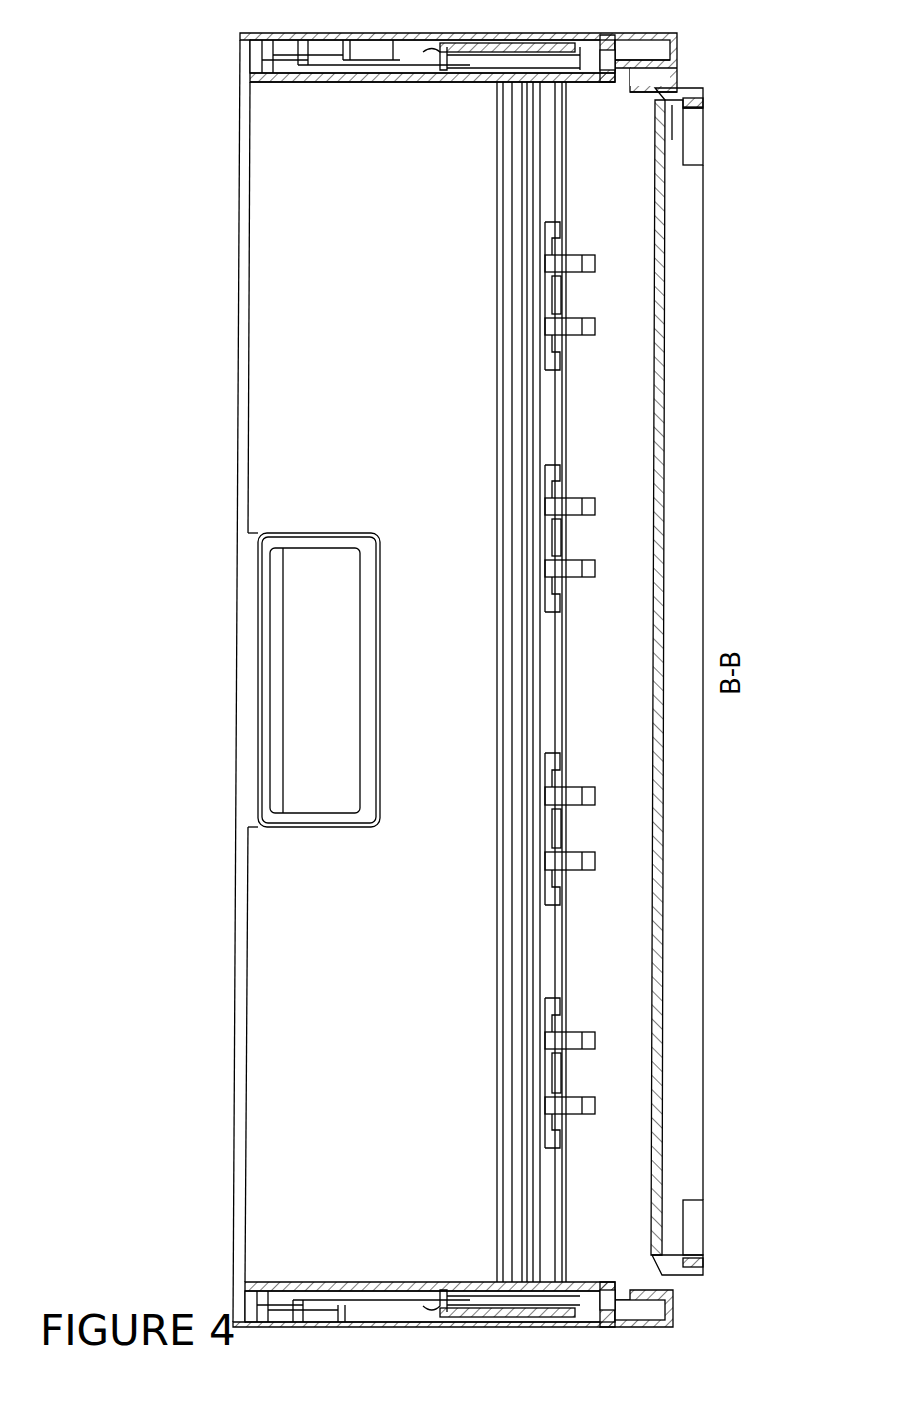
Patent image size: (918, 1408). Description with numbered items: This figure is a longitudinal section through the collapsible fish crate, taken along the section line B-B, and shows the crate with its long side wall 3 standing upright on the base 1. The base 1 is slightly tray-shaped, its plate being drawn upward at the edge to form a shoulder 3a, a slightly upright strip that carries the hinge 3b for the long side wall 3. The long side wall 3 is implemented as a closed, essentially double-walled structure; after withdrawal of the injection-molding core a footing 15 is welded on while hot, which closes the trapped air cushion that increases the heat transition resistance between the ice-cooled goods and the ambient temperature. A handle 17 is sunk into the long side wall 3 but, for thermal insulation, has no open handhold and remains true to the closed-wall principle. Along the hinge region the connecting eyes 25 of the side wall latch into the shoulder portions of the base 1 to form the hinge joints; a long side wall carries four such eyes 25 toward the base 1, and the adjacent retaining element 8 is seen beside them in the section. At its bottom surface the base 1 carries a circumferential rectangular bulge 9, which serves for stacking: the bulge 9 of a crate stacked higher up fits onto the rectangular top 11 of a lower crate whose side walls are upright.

The base 1 is at (660, 755).
The long side wall 3 is at (272, 917).
The shoulder 3a is at (620, 435).
The hinge 3b is at (560, 262).
The retaining tab 8 is at (588, 1110).
The circumferential rectangular bulge 9 is at (695, 100).
The rectangular top 11 is at (245, 1000).
The footing 15 is at (603, 40).
The handle 17 is at (305, 683).
The connecting eye 25 is at (557, 295).